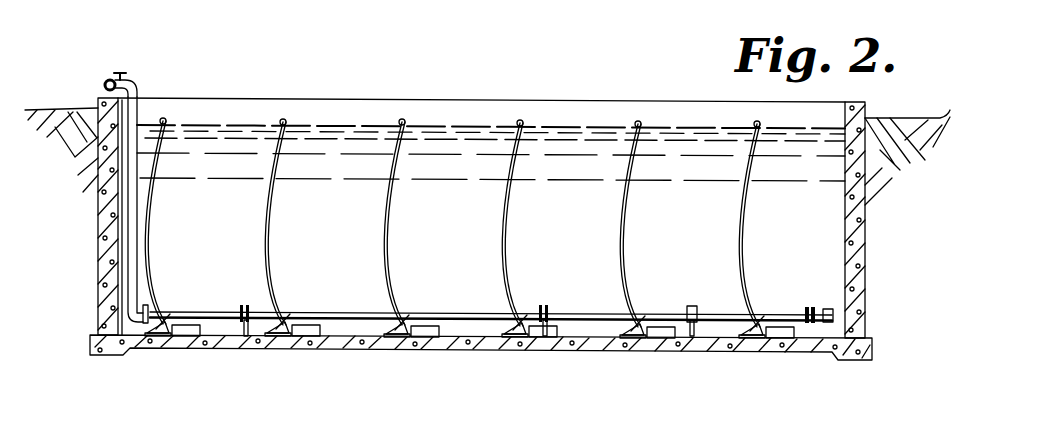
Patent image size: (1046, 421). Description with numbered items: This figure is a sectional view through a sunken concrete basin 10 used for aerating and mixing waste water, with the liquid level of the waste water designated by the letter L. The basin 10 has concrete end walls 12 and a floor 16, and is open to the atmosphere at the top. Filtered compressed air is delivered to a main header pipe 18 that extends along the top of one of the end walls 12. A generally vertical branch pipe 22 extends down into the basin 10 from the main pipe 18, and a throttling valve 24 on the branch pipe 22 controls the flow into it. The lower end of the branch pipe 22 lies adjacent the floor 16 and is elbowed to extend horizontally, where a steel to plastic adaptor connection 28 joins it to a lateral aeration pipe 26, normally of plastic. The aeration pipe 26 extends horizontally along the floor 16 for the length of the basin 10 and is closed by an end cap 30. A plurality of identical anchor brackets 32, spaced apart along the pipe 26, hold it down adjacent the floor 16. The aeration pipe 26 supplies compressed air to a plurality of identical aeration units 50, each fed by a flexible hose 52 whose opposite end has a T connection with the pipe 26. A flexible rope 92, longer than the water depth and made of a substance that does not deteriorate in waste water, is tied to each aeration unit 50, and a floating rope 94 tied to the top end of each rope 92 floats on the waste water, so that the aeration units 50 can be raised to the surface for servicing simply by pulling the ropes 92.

The sunken concrete basin 10 is at (92, 218).
The concrete end walls 12 is at (102, 281).
The floor 16 is at (483, 349).
The main header pipe 18 is at (106, 83).
The branch pipes 22 is at (136, 195).
The throttling valve 24 is at (120, 70).
The aeration pipe 26 is at (328, 312).
The steel to plastic adaptor connections 28 is at (146, 305).
The end caps 30 is at (831, 308).
The anchor brackets 32 is at (242, 318).
The aeration units 50 is at (192, 337).
The flexible hose 52 is at (152, 337).
The flexible rope 92 is at (263, 223).
The floating rope 94 is at (281, 121).
The liquid level L is at (365, 123).